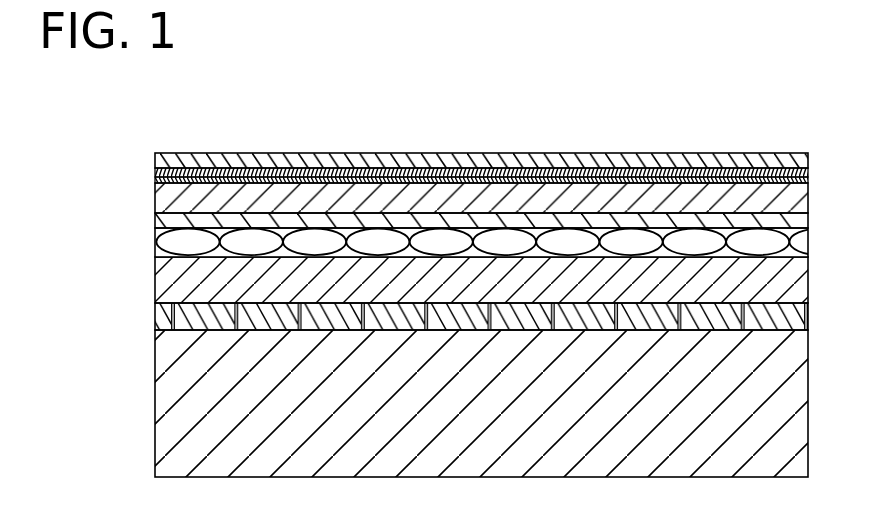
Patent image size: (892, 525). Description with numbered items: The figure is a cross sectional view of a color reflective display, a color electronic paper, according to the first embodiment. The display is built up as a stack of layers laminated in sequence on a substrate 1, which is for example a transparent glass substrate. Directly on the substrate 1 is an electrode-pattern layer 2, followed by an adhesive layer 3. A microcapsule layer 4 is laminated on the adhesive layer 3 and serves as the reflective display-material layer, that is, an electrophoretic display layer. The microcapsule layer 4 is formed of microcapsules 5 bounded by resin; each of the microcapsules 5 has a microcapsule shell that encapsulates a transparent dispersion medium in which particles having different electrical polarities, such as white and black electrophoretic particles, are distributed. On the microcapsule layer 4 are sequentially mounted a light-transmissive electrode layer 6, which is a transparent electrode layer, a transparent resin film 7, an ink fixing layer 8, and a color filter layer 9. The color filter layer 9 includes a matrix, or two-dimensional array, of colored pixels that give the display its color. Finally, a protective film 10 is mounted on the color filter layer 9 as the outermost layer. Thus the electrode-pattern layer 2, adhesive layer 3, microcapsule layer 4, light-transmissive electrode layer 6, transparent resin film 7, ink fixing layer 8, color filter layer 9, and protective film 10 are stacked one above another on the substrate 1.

The substrate 1 is at (792, 407).
The electrode-pattern layer 2 is at (793, 315).
The adhesive layer 3 is at (793, 283).
The microcapsule layer 4 is at (800, 242).
The microcapsules 5 is at (197, 243).
The light-transmissive electrode layer 6 is at (793, 221).
The transparent resin film 7 is at (793, 203).
The ink fixing layer 8 is at (748, 170).
The color filter layer 9 is at (532, 175).
The protective film 10 is at (413, 170).